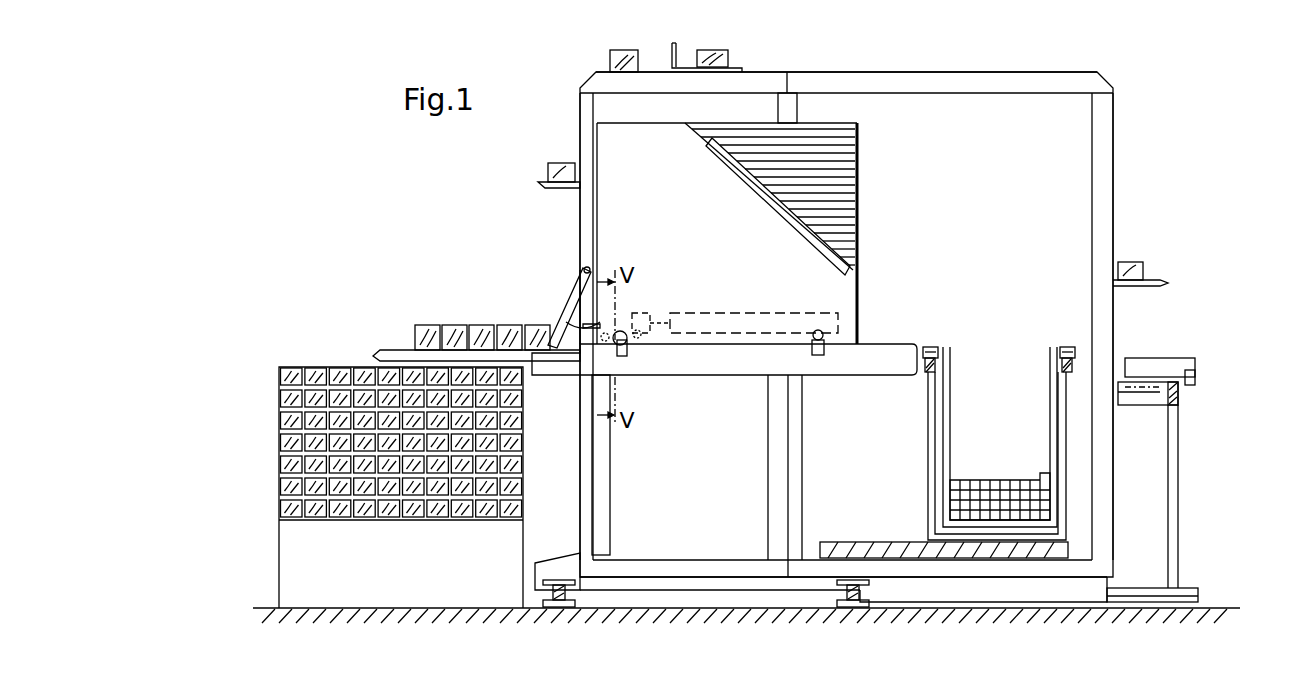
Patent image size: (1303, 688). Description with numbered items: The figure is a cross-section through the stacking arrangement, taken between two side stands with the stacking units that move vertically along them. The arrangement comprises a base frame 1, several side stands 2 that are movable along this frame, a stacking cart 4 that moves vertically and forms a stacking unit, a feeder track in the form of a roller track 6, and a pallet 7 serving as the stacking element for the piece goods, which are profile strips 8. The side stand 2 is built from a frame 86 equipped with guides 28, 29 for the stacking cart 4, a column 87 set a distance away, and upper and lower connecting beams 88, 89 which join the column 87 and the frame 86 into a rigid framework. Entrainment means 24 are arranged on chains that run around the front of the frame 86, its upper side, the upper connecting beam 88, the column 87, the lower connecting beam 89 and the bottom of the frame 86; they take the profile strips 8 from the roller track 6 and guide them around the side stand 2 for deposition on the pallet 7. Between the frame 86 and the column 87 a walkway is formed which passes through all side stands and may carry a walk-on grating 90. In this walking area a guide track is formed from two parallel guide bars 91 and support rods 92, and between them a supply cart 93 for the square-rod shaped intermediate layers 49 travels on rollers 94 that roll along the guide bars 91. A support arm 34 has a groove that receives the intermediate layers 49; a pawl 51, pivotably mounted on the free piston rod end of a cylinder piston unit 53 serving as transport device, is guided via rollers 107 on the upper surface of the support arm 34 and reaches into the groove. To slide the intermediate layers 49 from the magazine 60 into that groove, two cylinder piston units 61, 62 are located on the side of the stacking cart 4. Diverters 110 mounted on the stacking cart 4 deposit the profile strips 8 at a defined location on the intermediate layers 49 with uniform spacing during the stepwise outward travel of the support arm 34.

The base frame 1 is at (552, 610).
The side stand 2 is at (815, 72).
The stacking cart 4 is at (857, 376).
The roller track 6 is at (1152, 405).
The pallet 7 is at (388, 570).
The profile strips 8 is at (453, 332).
The entrainment means 24 is at (1150, 286).
The guide 28 is at (603, 516).
The guide 29 is at (777, 507).
The support arm 34 is at (386, 350).
The intermediate layers 49 is at (855, 160).
The pawl 51 is at (622, 330).
The cylinder piston unit 53 is at (755, 336).
The magazine 60 is at (663, 228).
The cylinder piston unit 61 is at (628, 343).
The cylinder piston unit 62 is at (814, 343).
The frame 86 is at (578, 224).
The column 87 is at (1113, 188).
The upper connecting beam 88 is at (1005, 82).
The lower connecting beam 89 is at (1014, 568).
The walk-on grating 90 is at (882, 546).
The guide bars 91 is at (927, 368).
The support rods 92 is at (926, 436).
The supply cart 93 is at (950, 396).
The rollers 94 is at (931, 346).
The rollers 107 is at (602, 345).
The diverter 110 is at (568, 300).